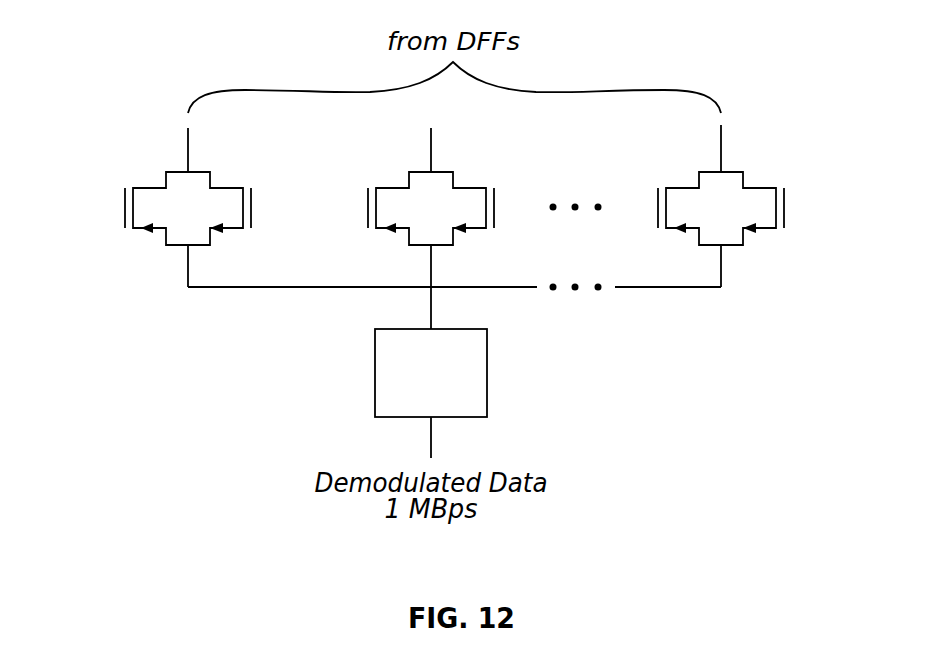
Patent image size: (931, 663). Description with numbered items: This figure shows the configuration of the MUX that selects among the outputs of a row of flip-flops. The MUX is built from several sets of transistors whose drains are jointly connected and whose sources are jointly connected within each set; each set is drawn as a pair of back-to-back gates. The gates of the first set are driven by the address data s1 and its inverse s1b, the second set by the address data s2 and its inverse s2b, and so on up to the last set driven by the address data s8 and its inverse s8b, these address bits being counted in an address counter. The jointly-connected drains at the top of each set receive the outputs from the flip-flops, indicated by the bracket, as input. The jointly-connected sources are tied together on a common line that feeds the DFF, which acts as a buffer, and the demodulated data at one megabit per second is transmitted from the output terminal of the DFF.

The address data s1 is at (125, 208).
The inverse address data s1b is at (293, 208).
The address data s2 is at (368, 208).
The inverse address data s2b is at (536, 208).
The address data s8 is at (658, 208).
The inverse address data s8b is at (784, 208).
The element DFF is at (431, 393).